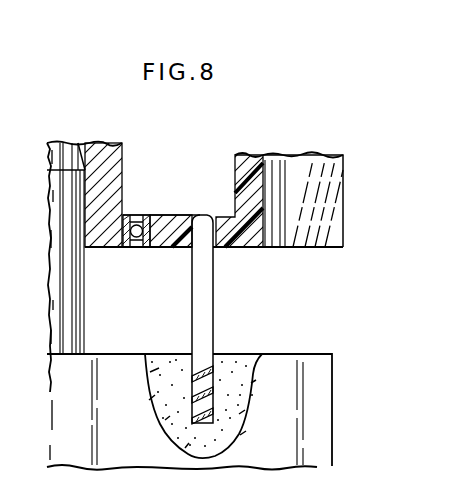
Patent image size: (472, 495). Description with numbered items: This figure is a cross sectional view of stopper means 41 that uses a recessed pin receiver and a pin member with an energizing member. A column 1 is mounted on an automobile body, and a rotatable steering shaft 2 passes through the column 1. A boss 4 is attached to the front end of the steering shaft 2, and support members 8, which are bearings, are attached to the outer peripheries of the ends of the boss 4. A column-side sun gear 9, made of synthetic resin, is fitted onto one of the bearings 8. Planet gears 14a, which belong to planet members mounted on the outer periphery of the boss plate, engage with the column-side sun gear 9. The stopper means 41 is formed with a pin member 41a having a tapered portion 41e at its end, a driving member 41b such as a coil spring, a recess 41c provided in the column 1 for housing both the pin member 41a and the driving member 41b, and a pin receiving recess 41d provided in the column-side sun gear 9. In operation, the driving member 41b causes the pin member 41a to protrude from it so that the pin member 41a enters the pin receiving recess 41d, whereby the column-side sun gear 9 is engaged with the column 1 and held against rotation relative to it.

The column 1 is at (323, 390).
The steering shaft 2 is at (73, 311).
The boss 4 is at (112, 148).
The support member 8 is at (125, 247).
The column-side sun gear 9 is at (242, 165).
The planet gear 14a is at (337, 175).
The stopper means 41 is at (199, 306).
The pin member 41a is at (212, 317).
The driving member 41b is at (213, 377).
The recess 41c is at (170, 383).
The pin receiving recess 41d is at (192, 248).
The tapered portion 41e is at (212, 215).